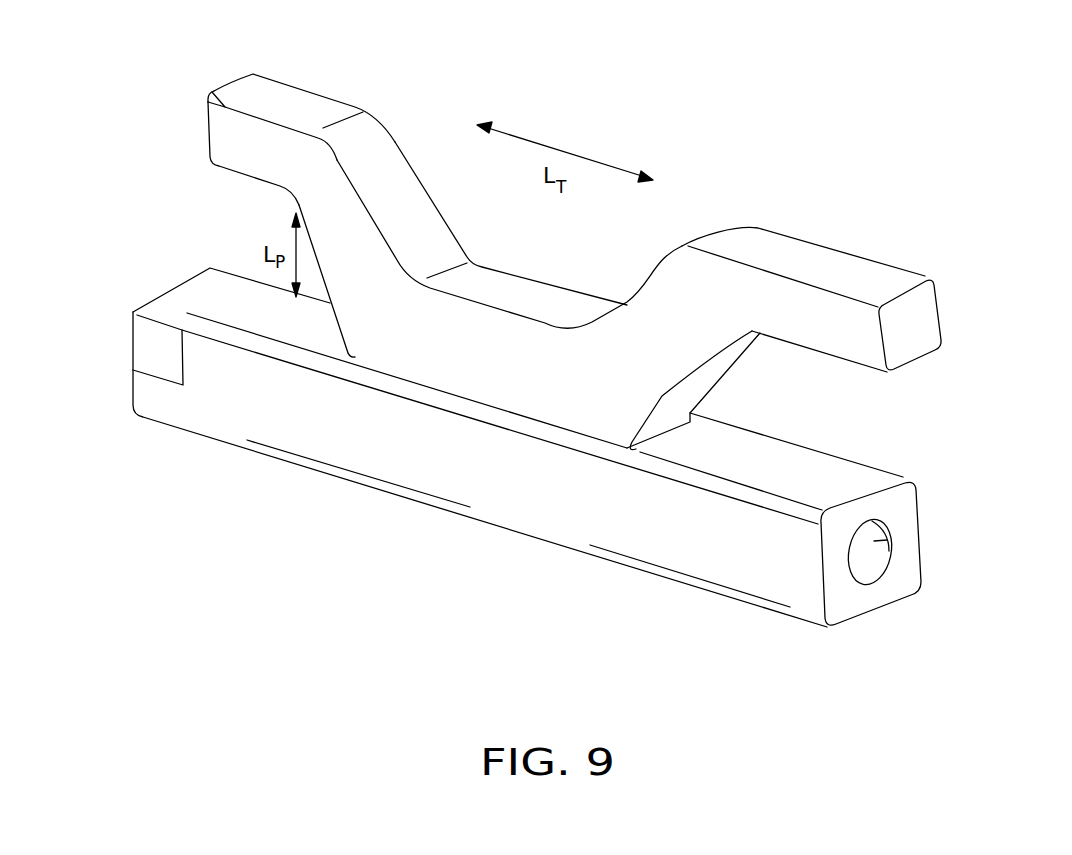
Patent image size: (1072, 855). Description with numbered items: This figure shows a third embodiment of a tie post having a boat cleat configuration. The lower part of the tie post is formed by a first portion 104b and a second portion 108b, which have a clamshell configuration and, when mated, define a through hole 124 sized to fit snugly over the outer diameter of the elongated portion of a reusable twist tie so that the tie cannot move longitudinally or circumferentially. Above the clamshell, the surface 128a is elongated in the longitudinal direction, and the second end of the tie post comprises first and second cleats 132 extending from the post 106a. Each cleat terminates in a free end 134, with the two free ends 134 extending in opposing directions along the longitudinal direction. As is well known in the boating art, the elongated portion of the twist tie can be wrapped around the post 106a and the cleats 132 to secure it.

The first portion 104b is at (187, 307).
The post 106a is at (628, 410).
The second portion 108b is at (742, 600).
The through hole 124 is at (872, 562).
The surface 128a is at (231, 173).
The first and second cleats 132 is at (316, 95).
The free end 134 is at (213, 94).